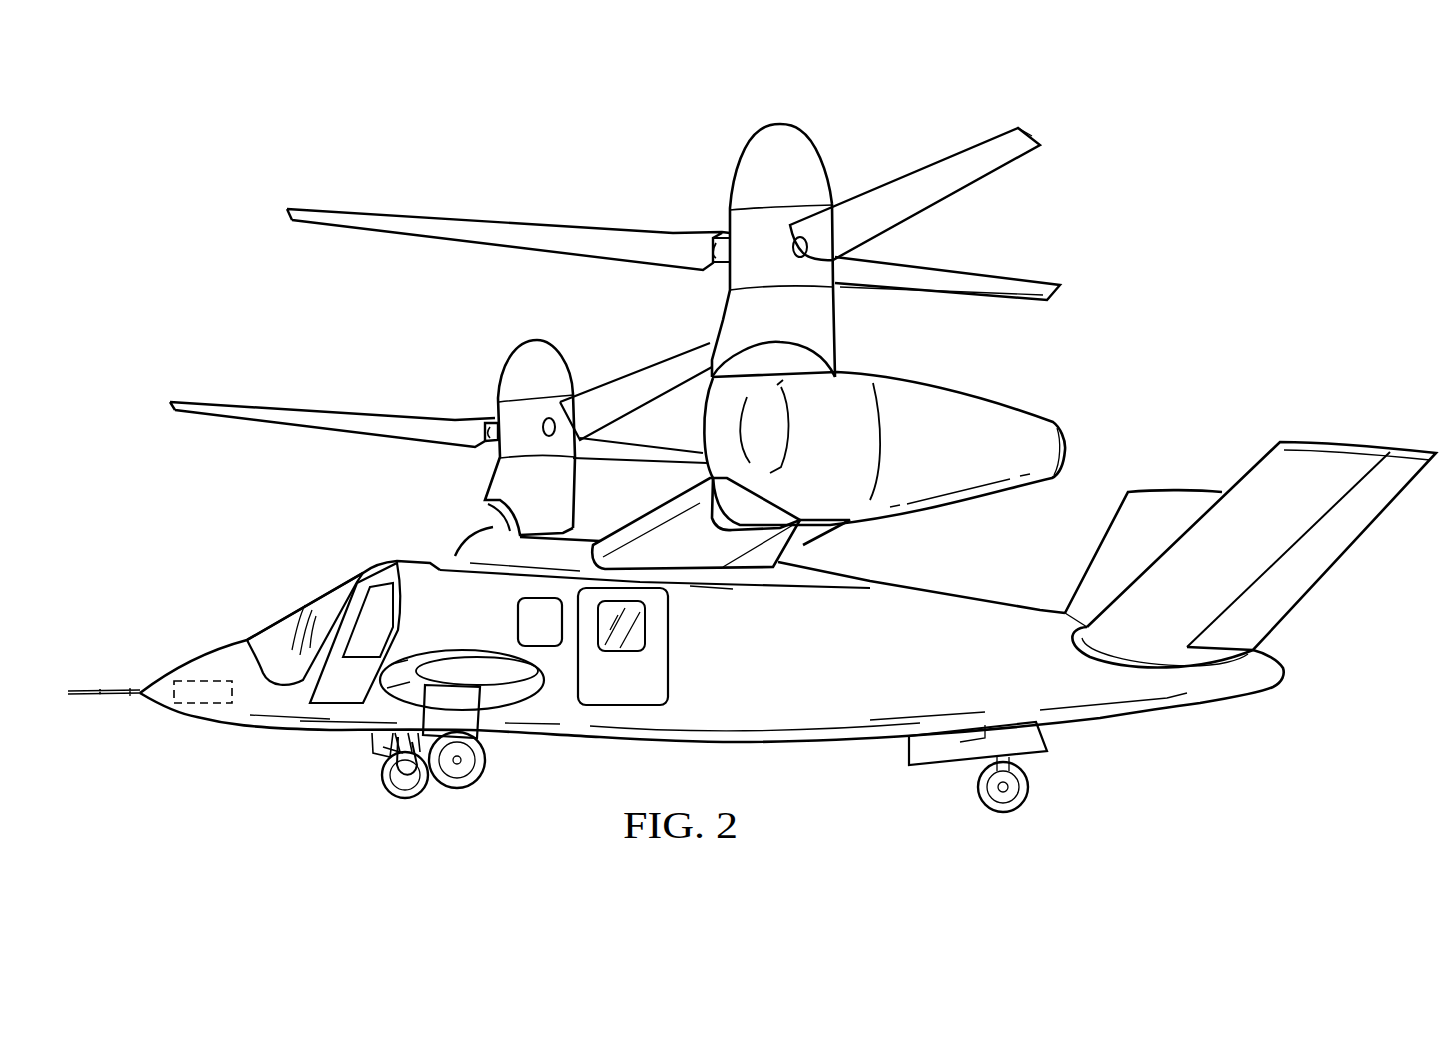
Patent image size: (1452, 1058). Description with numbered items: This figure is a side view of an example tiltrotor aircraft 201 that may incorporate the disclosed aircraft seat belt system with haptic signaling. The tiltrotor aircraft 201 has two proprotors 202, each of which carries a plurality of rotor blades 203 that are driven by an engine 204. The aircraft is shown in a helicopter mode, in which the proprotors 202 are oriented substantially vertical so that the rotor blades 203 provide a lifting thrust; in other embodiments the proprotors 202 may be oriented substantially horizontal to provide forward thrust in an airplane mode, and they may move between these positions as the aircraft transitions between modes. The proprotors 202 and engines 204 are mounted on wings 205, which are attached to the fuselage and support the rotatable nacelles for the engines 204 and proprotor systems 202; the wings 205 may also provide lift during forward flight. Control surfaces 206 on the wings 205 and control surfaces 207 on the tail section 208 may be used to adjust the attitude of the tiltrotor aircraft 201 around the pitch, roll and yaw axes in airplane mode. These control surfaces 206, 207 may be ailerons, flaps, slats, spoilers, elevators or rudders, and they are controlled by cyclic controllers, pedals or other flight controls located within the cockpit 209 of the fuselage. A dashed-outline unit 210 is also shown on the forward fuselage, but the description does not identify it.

The tiltrotor aircraft 201 is at (1190, 209).
The proprotor 202 is at (714, 174).
The rotor blades 203 is at (484, 222).
The engine 204 is at (697, 329).
The wings 205 is at (676, 533).
The control surfaces on wings 206 is at (795, 540).
The control surfaces on tail section 207 is at (1340, 555).
The tail section 208 is at (1165, 488).
The cockpit 209 is at (288, 608).
The sensor / avionics unit 210 is at (204, 705).